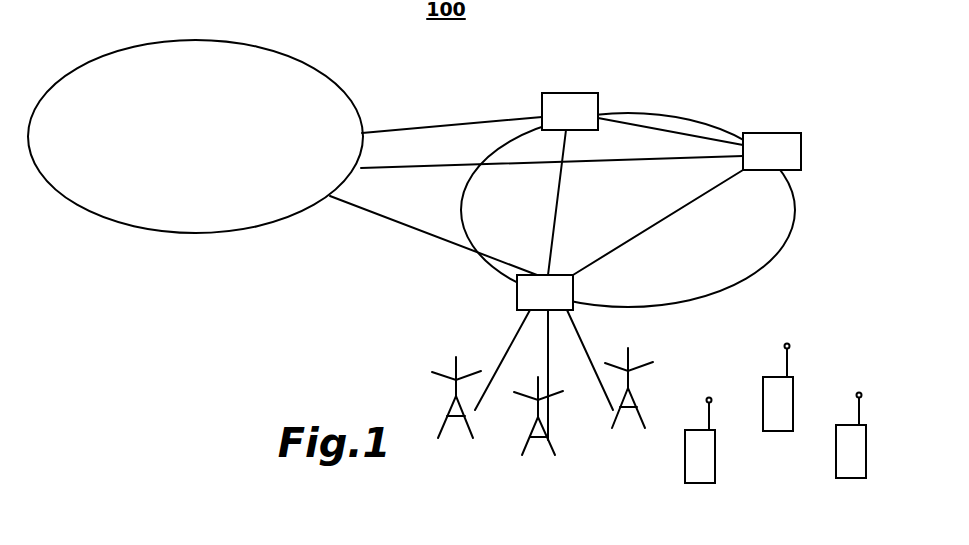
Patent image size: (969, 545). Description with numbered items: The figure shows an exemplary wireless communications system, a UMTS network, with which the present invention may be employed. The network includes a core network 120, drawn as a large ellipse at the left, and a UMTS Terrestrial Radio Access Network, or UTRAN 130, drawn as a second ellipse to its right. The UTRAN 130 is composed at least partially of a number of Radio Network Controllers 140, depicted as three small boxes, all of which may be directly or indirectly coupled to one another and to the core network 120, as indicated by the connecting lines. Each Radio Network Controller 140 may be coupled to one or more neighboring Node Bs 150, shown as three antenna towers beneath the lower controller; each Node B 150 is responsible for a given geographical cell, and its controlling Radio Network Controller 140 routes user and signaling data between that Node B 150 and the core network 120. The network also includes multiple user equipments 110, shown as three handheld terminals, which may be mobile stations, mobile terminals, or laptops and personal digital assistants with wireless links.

The user equipments 110 is at (773, 431).
The core network 120 is at (200, 233).
The UMTS Terrestrial Radio Access Network 130 is at (787, 242).
The Radio Network Controllers 140 is at (588, 93).
The Node Bs 150 is at (463, 443).